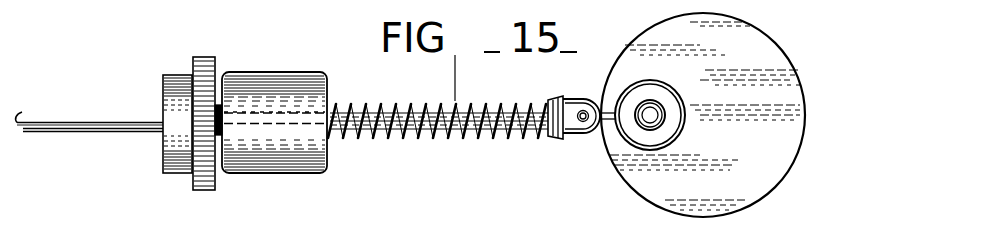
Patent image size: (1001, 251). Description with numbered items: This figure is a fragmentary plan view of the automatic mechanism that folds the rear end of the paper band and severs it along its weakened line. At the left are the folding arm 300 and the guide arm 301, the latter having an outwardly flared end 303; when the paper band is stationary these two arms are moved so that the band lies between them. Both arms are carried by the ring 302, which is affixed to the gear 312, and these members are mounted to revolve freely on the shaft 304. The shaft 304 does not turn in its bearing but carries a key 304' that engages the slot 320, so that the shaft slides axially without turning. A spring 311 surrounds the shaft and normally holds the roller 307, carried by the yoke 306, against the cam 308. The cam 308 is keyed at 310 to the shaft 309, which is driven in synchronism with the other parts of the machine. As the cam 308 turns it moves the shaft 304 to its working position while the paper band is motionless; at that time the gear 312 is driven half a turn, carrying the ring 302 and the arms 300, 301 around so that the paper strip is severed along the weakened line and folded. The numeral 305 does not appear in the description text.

The folding arm 300 is at (40, 131).
The guide arm 301 is at (118, 112).
The ring 302 is at (171, 94).
The outwardly flared end 303 is at (17, 122).
The shaft 304 is at (274, 108).
The key 304' is at (439, 100).
The drum surface 305 is at (293, 93).
The yoke 306 is at (568, 100).
The roller 307 is at (591, 139).
The cam 308 is at (657, 178).
The shaft 309 is at (645, 101).
The key 310 is at (675, 140).
The spring 311 is at (442, 102).
The gear 312 is at (208, 184).
The slot 320 is at (306, 124).